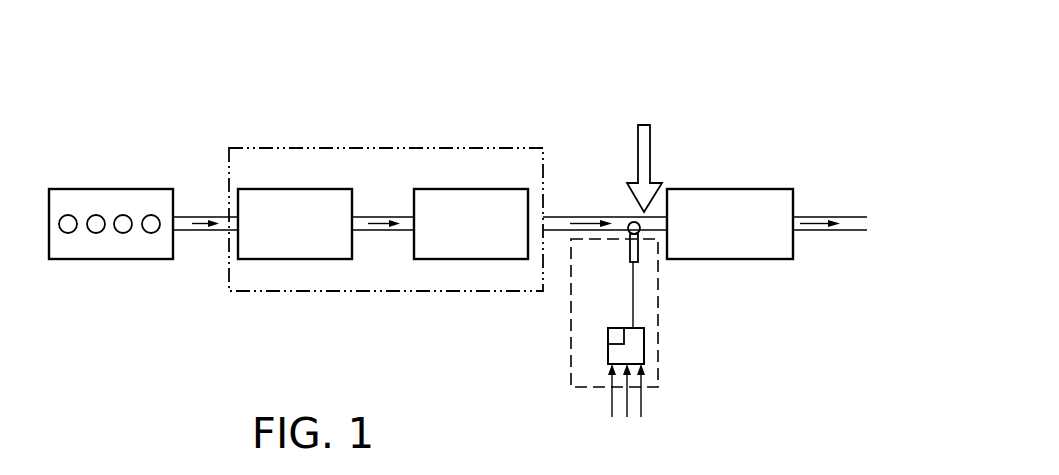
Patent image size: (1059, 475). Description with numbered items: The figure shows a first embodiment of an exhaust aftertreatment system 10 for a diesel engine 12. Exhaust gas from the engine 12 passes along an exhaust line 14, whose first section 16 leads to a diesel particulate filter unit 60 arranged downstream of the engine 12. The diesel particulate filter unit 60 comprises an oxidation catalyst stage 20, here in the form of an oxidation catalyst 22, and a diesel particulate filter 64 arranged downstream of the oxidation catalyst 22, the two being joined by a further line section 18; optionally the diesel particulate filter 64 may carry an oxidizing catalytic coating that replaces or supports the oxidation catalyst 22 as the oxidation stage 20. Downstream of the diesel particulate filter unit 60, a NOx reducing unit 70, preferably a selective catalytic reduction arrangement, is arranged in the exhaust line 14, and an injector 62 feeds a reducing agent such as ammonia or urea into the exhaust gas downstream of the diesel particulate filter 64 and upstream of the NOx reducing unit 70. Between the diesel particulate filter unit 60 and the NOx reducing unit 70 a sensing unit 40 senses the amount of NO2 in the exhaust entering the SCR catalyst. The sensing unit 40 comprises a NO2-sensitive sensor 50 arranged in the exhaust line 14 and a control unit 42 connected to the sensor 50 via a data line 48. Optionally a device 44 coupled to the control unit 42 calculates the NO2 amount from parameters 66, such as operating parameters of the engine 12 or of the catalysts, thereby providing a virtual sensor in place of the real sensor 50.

The exhaust aftertreatment system 10 is at (662, 78).
The diesel engine 12 is at (135, 189).
The exhaust line 14 is at (585, 217).
The exhaust line section 16 is at (213, 217).
The exhaust line section 18 is at (385, 217).
The oxidation catalyst stage 20 is at (275, 173).
The oxidation catalyst 22 is at (297, 189).
The sensing unit 40 is at (569, 350).
The control unit 42 is at (628, 328).
The device 44 is at (608, 336).
The data line 48 is at (634, 288).
The NO2-sensitive sensor 50 is at (639, 252).
The diesel particulate filter unit 60 is at (430, 148).
The injector 62 is at (645, 125).
The diesel particulate filter 64 is at (485, 189).
The parameters 66 is at (635, 402).
The NOx reducing unit 70 is at (730, 189).